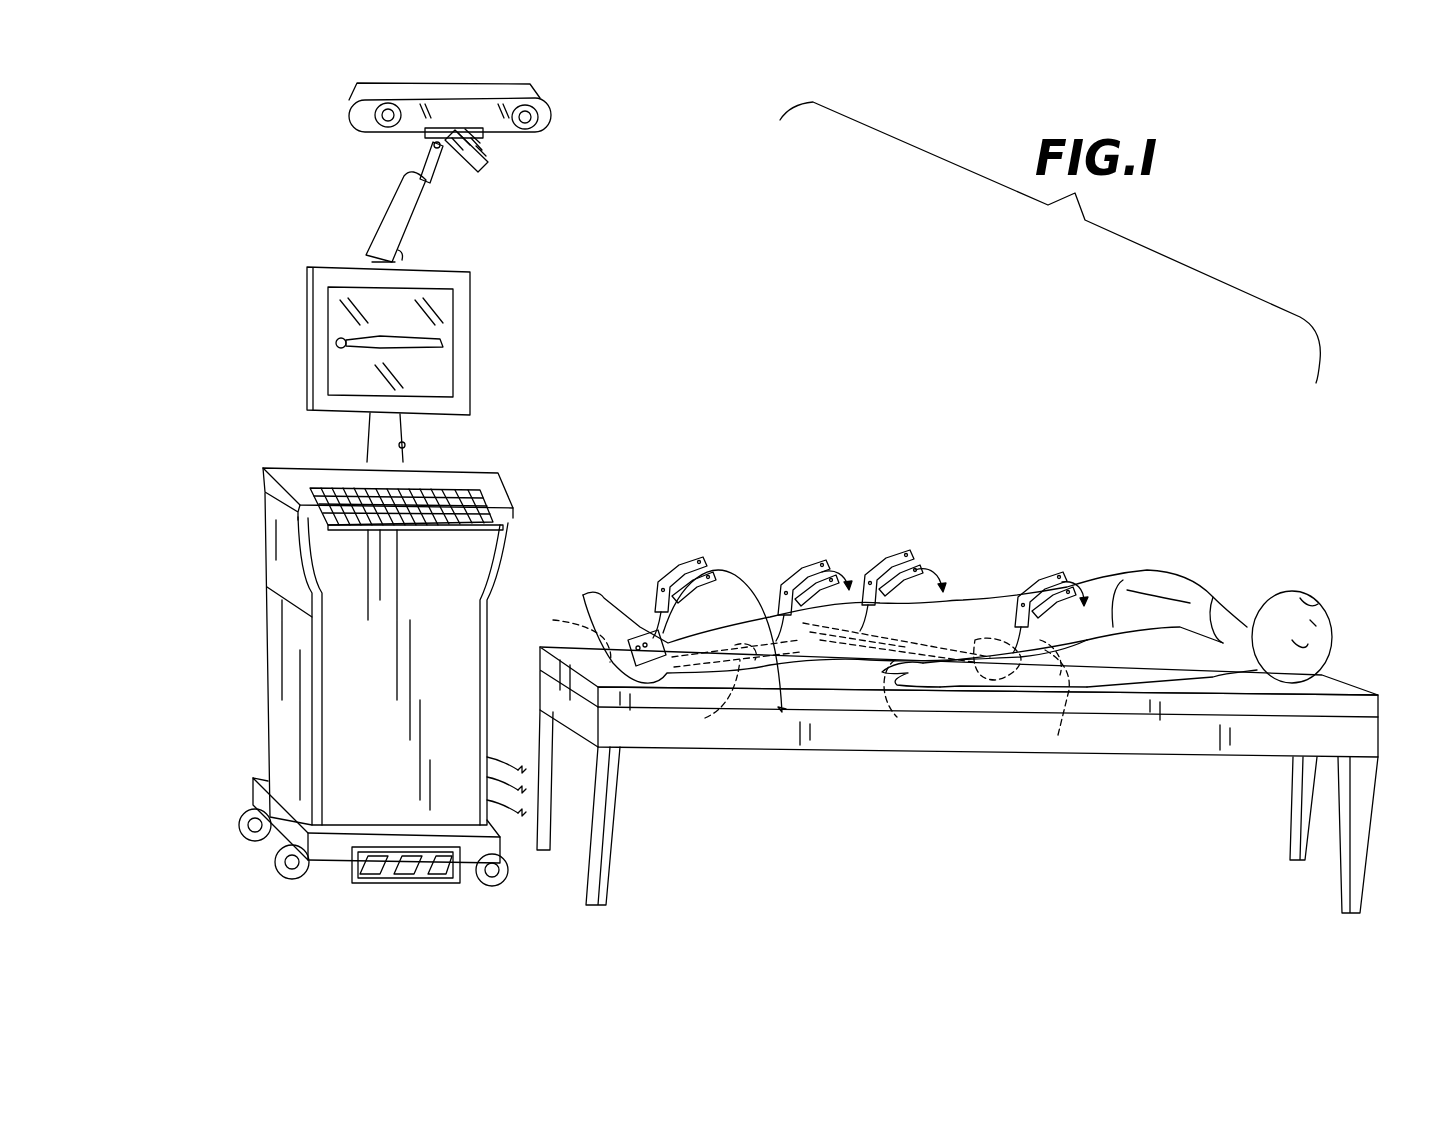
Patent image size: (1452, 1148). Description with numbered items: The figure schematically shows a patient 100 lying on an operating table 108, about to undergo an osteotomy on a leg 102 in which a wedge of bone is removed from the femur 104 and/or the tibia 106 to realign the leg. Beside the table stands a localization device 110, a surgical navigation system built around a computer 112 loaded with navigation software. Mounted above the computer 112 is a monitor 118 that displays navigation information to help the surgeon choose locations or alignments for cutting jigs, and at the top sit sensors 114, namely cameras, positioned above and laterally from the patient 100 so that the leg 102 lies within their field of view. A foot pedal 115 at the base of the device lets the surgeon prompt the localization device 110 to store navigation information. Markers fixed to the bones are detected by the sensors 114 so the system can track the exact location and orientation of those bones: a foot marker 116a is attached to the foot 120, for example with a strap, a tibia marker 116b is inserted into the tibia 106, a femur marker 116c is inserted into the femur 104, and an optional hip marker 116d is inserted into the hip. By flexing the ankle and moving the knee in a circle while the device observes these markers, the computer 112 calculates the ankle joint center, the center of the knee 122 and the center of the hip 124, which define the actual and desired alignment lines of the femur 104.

The patient 100 is at (1140, 558).
The leg 102 is at (917, 620).
The femur 104 is at (897, 717).
The tibia 106 is at (705, 718).
The operating table 108 is at (1327, 672).
The localization device 110 is at (302, 245).
The computer 112 is at (285, 622).
The sensors 114 is at (385, 118).
The foot pedal 115 is at (373, 853).
The foot marker 116a is at (660, 578).
The tibia marker 116b is at (783, 577).
The femur marker 116c is at (873, 567).
The hip marker 116d is at (1000, 570).
The monitor 118 is at (350, 364).
The foot 120 is at (553, 630).
The center of the knee 122 is at (826, 623).
The center of the hip 124 is at (1034, 702).